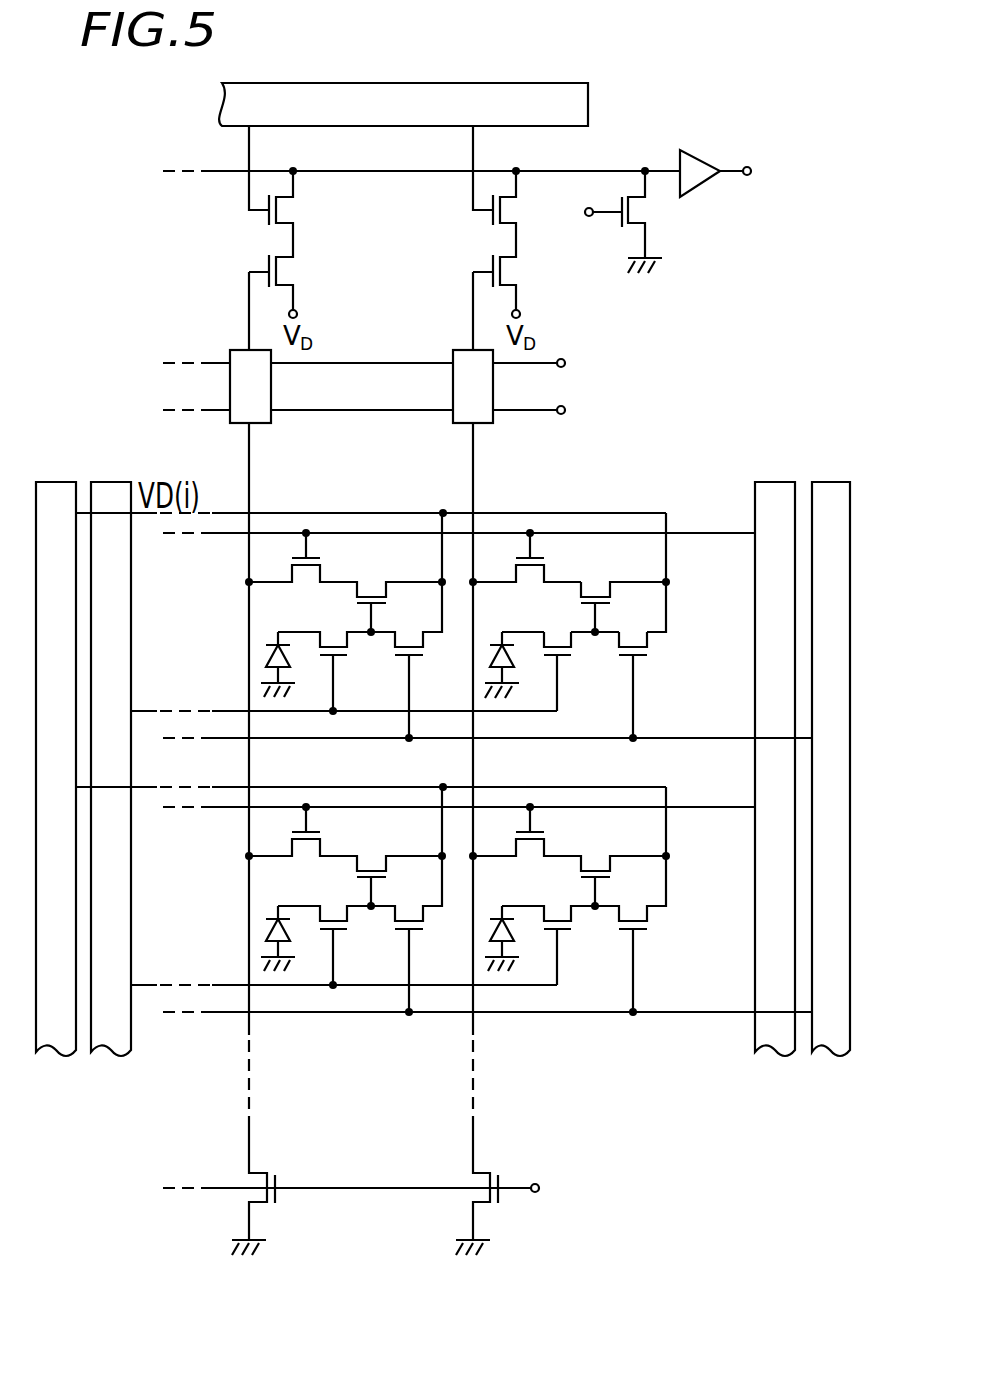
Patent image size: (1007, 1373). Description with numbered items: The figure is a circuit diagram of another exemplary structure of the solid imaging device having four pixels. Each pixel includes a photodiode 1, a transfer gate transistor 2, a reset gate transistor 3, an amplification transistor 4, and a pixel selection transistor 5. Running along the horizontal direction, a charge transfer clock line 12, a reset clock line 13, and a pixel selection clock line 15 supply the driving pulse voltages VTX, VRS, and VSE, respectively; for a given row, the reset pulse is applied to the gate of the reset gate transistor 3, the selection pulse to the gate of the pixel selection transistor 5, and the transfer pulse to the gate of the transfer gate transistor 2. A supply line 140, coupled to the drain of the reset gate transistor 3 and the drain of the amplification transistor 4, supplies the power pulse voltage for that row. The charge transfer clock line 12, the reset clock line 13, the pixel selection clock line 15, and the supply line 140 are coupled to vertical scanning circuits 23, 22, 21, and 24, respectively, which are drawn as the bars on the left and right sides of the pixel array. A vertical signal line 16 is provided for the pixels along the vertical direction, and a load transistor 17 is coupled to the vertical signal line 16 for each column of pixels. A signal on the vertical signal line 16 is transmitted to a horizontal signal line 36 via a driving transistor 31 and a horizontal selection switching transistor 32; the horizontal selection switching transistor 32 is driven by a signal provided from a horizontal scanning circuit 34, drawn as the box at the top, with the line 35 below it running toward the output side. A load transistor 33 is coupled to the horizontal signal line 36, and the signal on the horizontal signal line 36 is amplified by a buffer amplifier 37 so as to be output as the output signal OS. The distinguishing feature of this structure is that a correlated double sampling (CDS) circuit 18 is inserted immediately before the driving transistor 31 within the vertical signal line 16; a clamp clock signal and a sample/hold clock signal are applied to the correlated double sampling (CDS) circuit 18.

The photodiode 1 is at (500, 645).
The transfer gate transistor 2 is at (572, 653).
The reset gate transistor 3 is at (648, 651).
The amplification transistor 4 is at (608, 601).
The pixel selection transistor 5 is at (516, 558).
The charge transfer clock line 12 is at (540, 713).
The reset clock line 13 is at (604, 740).
The pixel selection clock line 15 is at (610, 534).
The vertical signal line 16 is at (473, 470).
The load transistor 17 is at (493, 1168).
The correlated double sampling (CDS) circuit 18 is at (453, 352).
The vertical scanning circuit 21 is at (770, 482).
The vertical scanning circuit 22 is at (827, 482).
The vertical scanning circuit 23 is at (108, 482).
The vertical scanning circuit 24 is at (52, 482).
The driving transistor 31 is at (508, 272).
The horizontal selection switching transistor 32 is at (508, 210).
The load transistor 33 is at (620, 238).
The horizontal scanning circuit 34 is at (588, 110).
The horizontal signal line 35 is at (473, 156).
The horizontal signal line 36 is at (617, 171).
The buffer amplifier 37 is at (703, 155).
The supply line 140 is at (581, 593).